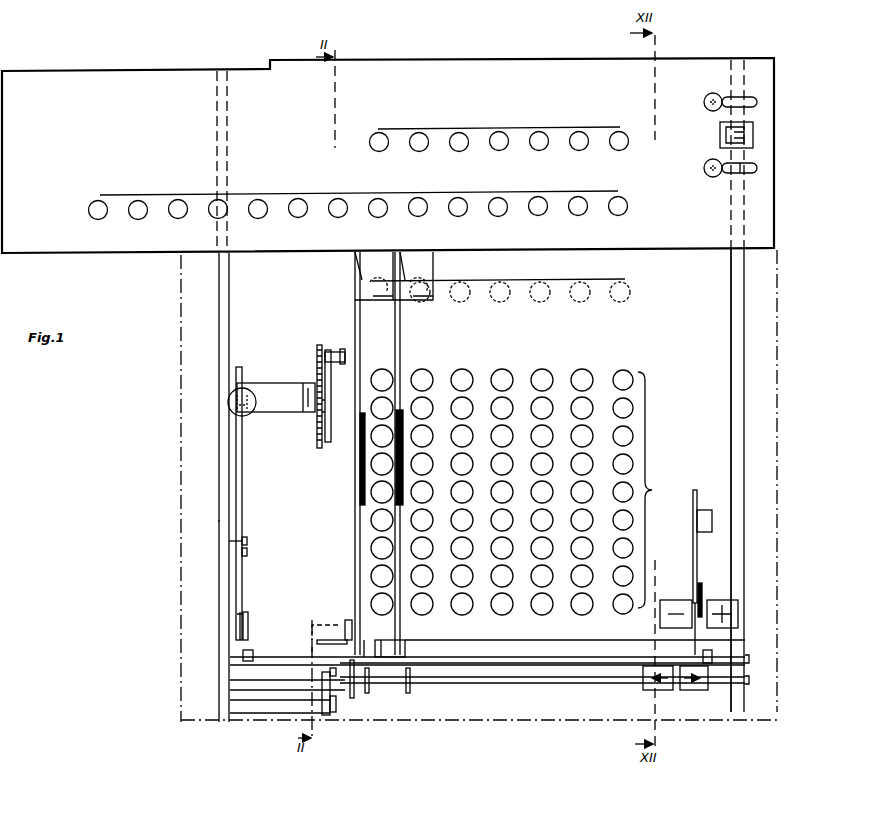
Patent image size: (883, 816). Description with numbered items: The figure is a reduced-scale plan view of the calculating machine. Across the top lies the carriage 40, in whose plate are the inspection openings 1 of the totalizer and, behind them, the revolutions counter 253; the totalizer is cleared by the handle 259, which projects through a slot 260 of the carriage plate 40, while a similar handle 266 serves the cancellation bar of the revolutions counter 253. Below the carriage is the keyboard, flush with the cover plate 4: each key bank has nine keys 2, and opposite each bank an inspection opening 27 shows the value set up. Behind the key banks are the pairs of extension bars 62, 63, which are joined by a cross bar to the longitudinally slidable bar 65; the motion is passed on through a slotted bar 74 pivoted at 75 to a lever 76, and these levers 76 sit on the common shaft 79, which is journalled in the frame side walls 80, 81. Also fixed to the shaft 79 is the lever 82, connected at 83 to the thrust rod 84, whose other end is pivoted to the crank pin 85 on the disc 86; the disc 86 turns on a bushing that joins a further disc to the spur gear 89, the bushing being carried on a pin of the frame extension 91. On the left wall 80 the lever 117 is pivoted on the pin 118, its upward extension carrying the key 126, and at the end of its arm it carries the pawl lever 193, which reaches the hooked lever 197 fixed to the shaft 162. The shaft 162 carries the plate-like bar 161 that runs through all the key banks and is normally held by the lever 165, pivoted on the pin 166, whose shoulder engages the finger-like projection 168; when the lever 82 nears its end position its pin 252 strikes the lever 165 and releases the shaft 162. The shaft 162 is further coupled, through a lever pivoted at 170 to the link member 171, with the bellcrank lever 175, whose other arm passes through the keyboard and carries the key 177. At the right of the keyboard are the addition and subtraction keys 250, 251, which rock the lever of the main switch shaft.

The inspection openings 1 is at (362, 194).
The keys 2 is at (517, 492).
The cover plate 4 is at (181, 452).
The inspection opening 27 is at (504, 280).
The carriage 40 is at (765, 233).
The bar 62 is at (355, 262).
The bar 63 is at (378, 256).
The bar 65 is at (397, 302).
The bar 74 is at (400, 523).
The pivot 75 is at (384, 638).
The lever 76 is at (407, 672).
The shaft 79 is at (463, 684).
The frame side wall 80 is at (220, 522).
The frame side wall 81 is at (738, 533).
The lever 82 is at (355, 684).
The connection 83 is at (345, 626).
The thrust rod 84 is at (353, 532).
The crank pin 85 is at (336, 350).
The disc 86 is at (328, 445).
The spur gear 89 is at (317, 430).
The frame extension 91 is at (266, 388).
The lever 117 is at (241, 456).
The pivot pin 118 is at (244, 551).
The key 126 is at (248, 413).
The bar 161 is at (432, 646).
The shaft 162 is at (714, 657).
The lever 165 is at (330, 716).
The pin 166 is at (283, 702).
The finger-like projection 168 is at (320, 660).
The pivot 170 is at (700, 666).
The link member 171 is at (701, 585).
The bellcrank lever 175 is at (697, 550).
The key 177 is at (712, 522).
The pawl lever 193 is at (243, 640).
The lever 197 is at (255, 652).
The addition key 250 is at (740, 618).
The subtraction key 251 is at (668, 600).
The pin 252 is at (330, 640).
The revolutions counter 253 is at (505, 128).
The handle 259 is at (740, 157).
The slot 260 is at (748, 171).
The handle 266 is at (722, 100).